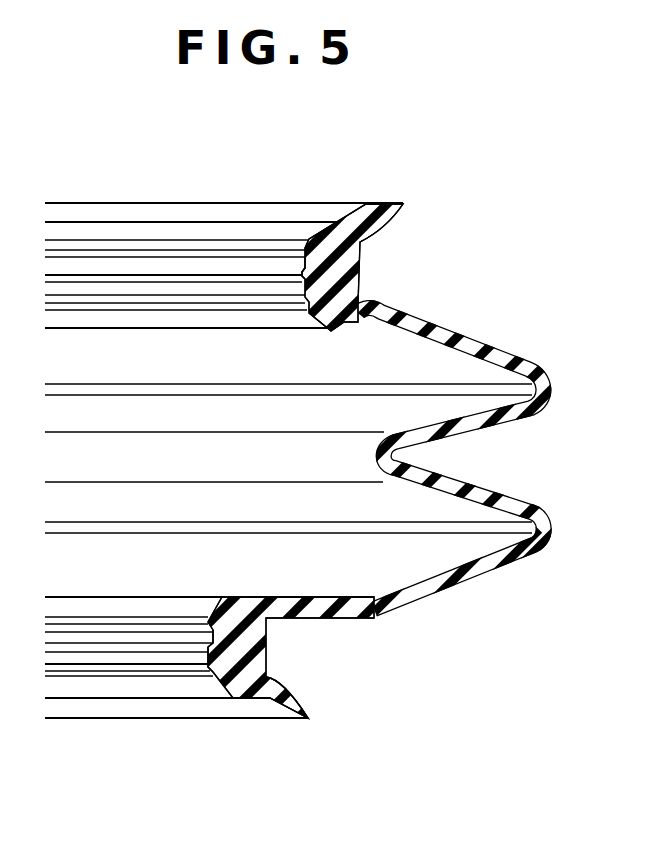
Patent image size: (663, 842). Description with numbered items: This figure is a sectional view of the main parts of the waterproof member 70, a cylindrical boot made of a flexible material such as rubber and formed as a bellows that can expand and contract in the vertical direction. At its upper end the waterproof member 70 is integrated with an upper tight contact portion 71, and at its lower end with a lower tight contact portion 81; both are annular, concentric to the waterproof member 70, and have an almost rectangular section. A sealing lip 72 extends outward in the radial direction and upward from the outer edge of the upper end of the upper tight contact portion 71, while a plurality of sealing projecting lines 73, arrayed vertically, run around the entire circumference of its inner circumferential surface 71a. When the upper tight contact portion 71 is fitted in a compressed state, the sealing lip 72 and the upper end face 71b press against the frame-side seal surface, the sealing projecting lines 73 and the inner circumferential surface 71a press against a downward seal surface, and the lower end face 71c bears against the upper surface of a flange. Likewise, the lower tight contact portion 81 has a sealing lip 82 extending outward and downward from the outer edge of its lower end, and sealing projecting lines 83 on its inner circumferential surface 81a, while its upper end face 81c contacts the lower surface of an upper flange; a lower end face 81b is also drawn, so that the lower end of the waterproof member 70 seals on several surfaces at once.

The waterproof member 70 is at (504, 336).
The upper tight contact portion 71 is at (362, 262).
The inner circumferential surface 71a is at (304, 267).
The upper end face 71b is at (347, 223).
The lower end face 71c is at (330, 334).
The sealing lip 72 is at (383, 221).
The sealing projecting lines 73 is at (303, 283).
The lower tight contact portion 81 is at (254, 637).
The inner circumferential surface 81a is at (208, 658).
The end surface of small-diameter mounting portion 81b is at (242, 699).
The upper end face 81c is at (256, 598).
The sealing lip 82 is at (300, 712).
The sealing projecting lines 83 is at (208, 646).